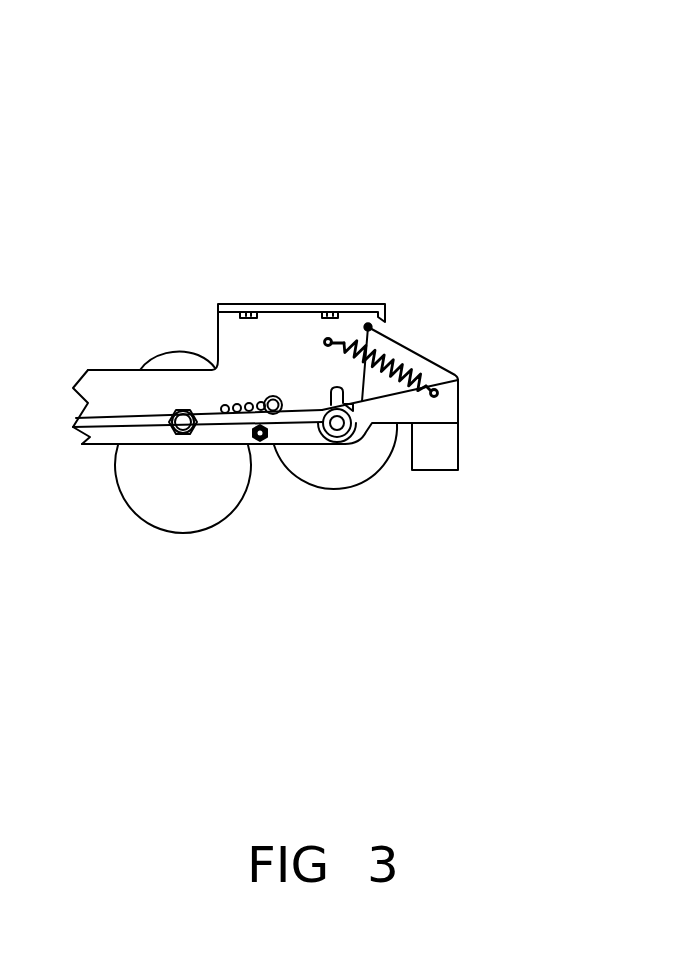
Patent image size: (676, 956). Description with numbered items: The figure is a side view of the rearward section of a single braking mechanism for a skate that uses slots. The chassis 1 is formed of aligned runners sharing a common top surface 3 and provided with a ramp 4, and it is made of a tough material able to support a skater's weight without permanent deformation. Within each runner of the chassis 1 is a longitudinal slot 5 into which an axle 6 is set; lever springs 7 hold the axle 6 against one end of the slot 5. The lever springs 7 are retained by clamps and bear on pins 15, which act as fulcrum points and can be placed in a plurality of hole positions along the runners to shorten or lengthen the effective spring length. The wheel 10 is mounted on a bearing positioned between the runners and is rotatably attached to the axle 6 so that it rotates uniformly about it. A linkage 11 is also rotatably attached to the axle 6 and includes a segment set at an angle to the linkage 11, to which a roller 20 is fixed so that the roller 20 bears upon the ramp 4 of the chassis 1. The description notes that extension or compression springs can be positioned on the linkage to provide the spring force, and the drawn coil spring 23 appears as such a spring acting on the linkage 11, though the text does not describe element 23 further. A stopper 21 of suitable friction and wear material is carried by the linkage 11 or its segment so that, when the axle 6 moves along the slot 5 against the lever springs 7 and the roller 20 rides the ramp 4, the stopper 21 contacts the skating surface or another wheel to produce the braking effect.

The chassis 1 is at (132, 390).
The common top surface 3 is at (402, 342).
The ramp 4 is at (368, 325).
The longitudinal slot 5 is at (343, 390).
The axle 6 is at (337, 430).
The lever springs 7 is at (110, 428).
The wheel 10 is at (178, 490).
The linkage 11 is at (386, 408).
The pins 15 is at (282, 413).
The roller 20 is at (366, 324).
The stopper 21 is at (433, 450).
The tension spring 23 is at (400, 368).